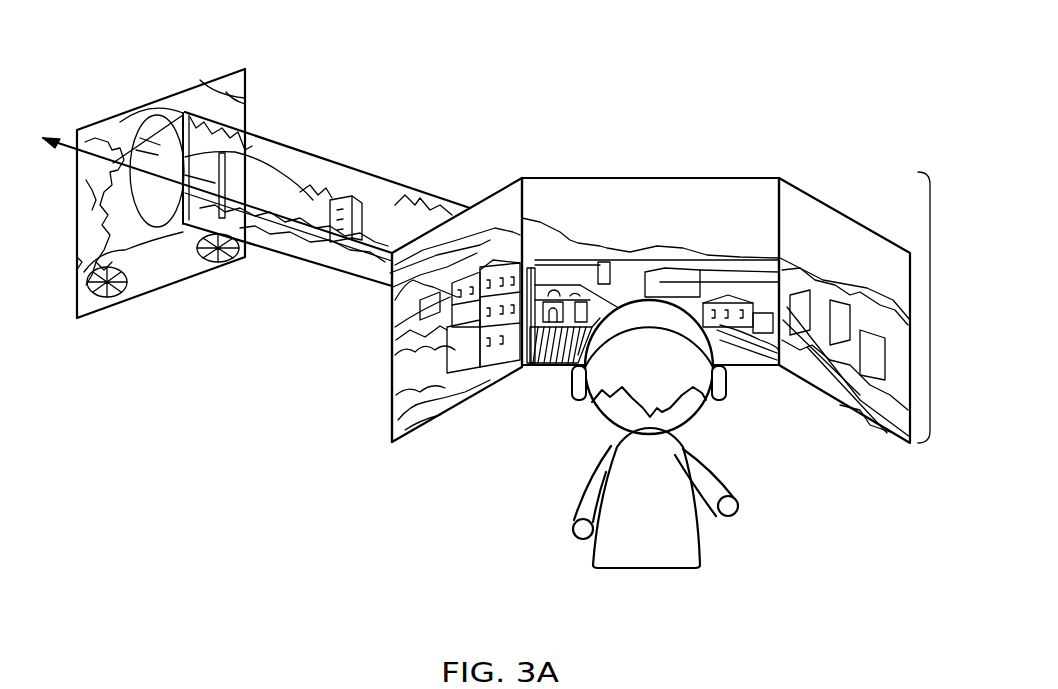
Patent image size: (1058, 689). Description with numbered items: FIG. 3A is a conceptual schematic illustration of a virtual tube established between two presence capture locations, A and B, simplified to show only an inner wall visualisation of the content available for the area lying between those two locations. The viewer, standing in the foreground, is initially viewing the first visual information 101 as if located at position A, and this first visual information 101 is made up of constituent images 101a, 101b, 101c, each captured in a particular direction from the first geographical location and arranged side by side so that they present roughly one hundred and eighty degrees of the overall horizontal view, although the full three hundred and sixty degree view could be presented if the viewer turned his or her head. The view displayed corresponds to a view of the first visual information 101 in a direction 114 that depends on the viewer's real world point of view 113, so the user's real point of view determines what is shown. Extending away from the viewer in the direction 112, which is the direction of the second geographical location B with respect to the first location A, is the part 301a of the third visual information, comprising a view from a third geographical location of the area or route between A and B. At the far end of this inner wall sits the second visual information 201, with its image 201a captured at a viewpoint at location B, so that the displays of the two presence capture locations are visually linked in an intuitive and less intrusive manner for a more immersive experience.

The first visual information 101 is at (930, 300).
The image of first visual information 101a is at (503, 222).
The image of first visual information 101b is at (672, 200).
The image of first visual information 101c is at (825, 230).
The direction 112 is at (48, 142).
The real world point of view 113 is at (643, 586).
The direction of view 114 is at (673, 586).
The second visual information 201 is at (238, 92).
The image of second visual information 201a is at (183, 112).
The part of third visual information 301a is at (330, 183).